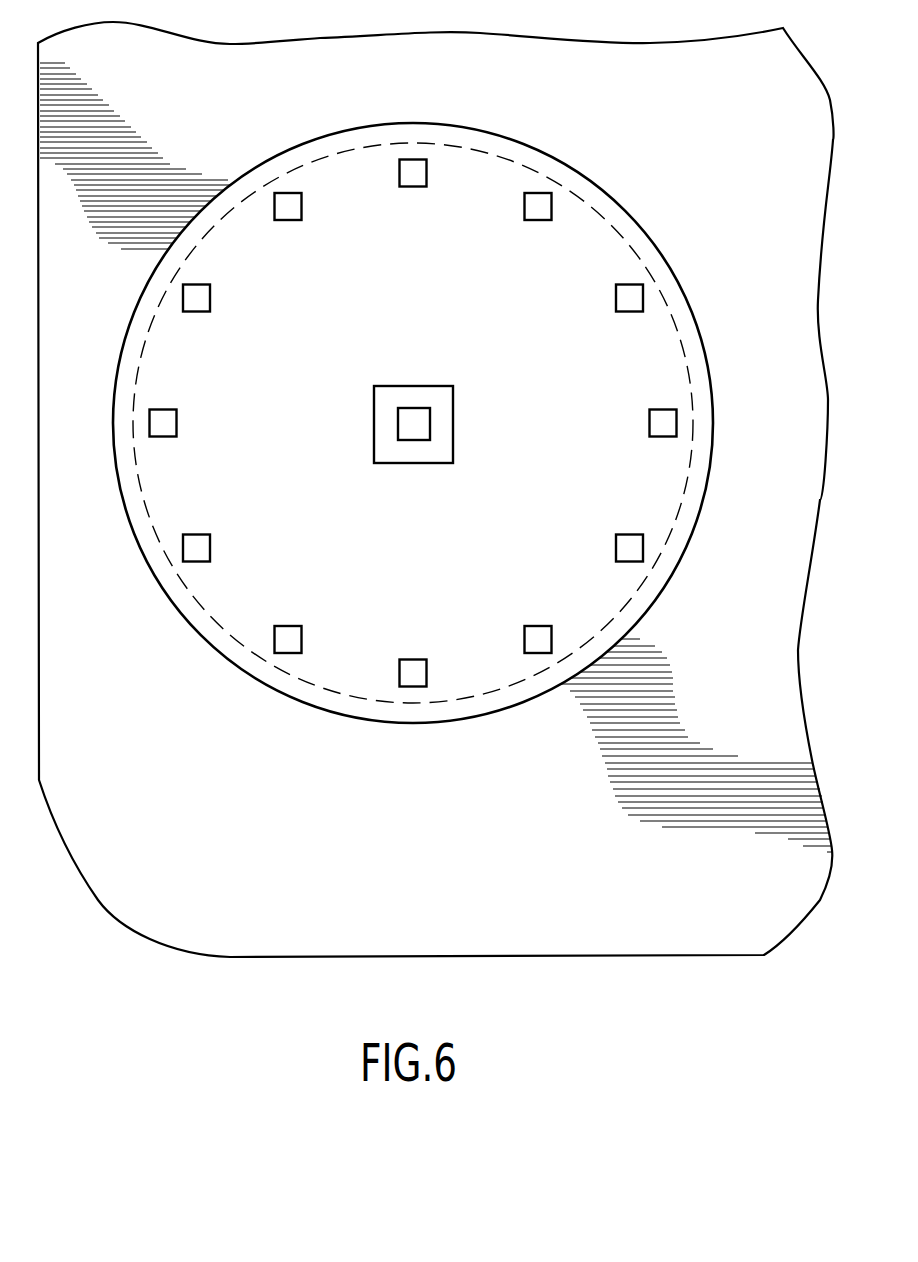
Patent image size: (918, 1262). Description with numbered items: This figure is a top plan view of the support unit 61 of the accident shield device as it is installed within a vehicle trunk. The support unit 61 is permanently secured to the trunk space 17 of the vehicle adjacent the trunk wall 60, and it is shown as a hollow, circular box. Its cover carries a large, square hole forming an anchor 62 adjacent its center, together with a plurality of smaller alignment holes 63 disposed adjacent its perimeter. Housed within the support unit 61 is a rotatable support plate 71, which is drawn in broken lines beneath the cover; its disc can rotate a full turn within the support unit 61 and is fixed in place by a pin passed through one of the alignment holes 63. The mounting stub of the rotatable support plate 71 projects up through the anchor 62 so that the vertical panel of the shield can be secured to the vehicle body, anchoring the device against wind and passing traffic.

The trunk space 17 is at (436, 489).
The trunk wall 60 is at (111, 914).
The support unit 61 is at (705, 332).
The anchor 62 is at (424, 386).
The alignment holes 63 is at (553, 203).
The rotatable support plate 71 is at (600, 265).